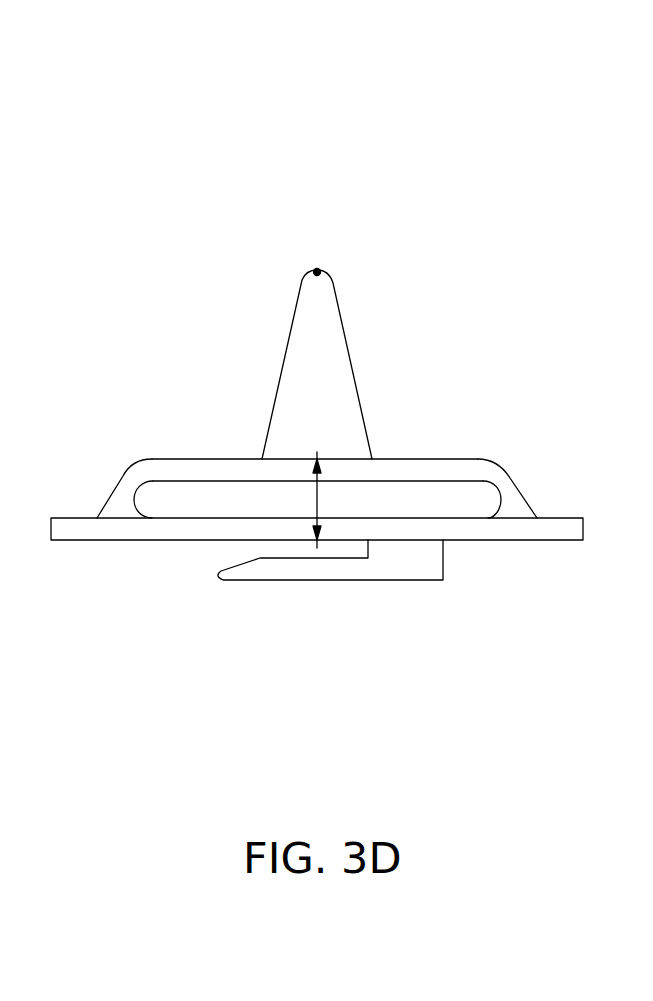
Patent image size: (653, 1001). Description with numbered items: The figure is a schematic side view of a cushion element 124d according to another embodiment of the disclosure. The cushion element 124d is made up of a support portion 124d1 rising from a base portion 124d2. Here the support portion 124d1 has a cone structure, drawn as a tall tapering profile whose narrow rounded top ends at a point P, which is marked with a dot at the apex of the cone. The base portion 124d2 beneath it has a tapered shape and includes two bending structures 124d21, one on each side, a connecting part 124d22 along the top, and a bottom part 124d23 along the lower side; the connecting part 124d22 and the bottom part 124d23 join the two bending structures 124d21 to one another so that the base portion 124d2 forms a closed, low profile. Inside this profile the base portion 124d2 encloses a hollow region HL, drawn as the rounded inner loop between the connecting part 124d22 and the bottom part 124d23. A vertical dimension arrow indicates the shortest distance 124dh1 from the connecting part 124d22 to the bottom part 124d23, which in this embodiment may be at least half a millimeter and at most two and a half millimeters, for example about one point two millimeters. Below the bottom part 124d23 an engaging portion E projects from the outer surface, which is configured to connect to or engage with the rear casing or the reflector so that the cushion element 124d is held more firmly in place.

The cushion element 124d is at (110, 143).
The support portion 124d1 is at (345, 352).
The base portion 124d2 is at (562, 518).
The bending structures 124d21 is at (122, 479).
The connecting part 124d22 is at (240, 458).
The bottom part 124d23 is at (164, 519).
The shortest distance 124dh1 is at (317, 499).
The apex point P is at (312, 272).
The hollow region HL is at (480, 502).
The engaging portion E is at (340, 580).